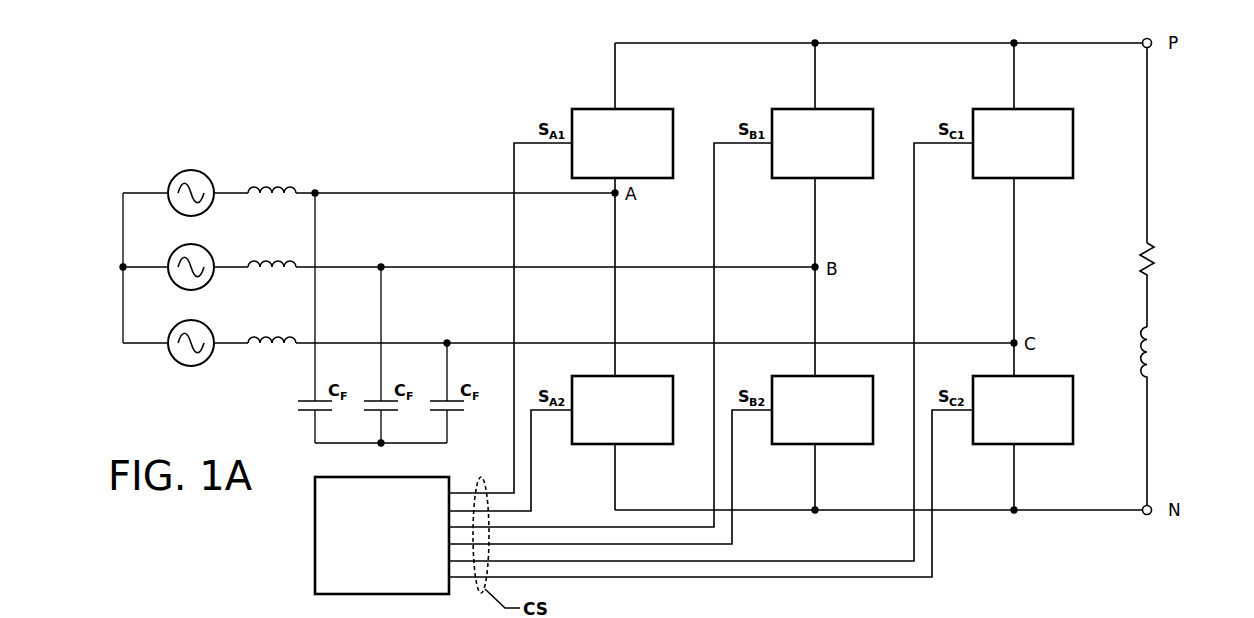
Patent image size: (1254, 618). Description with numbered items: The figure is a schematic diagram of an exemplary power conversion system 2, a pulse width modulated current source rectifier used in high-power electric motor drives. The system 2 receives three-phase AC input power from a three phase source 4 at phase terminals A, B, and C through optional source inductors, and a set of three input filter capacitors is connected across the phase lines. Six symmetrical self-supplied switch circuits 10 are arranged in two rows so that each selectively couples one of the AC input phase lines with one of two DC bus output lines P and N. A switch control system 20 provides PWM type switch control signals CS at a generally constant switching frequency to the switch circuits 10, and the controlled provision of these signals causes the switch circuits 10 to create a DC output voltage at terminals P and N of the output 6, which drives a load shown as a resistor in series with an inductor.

The power conversion system 2 is at (173, 105).
The three phase source 4 is at (165, 381).
The load 6 is at (1212, 77).
The switch circuit 10 is at (648, 178).
The switch control system 20 is at (315, 538).